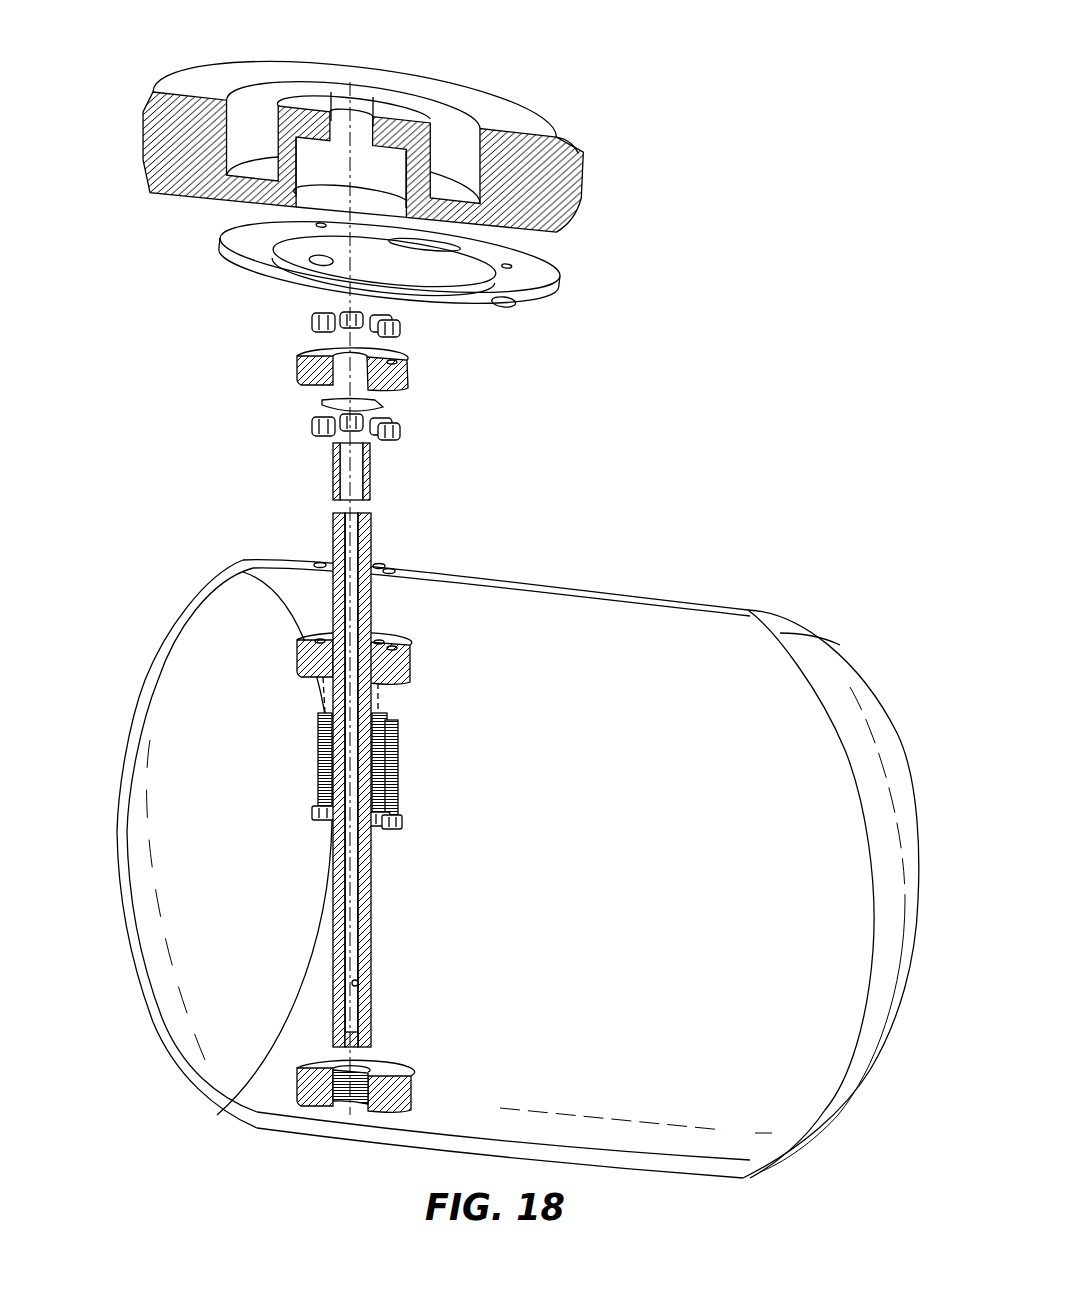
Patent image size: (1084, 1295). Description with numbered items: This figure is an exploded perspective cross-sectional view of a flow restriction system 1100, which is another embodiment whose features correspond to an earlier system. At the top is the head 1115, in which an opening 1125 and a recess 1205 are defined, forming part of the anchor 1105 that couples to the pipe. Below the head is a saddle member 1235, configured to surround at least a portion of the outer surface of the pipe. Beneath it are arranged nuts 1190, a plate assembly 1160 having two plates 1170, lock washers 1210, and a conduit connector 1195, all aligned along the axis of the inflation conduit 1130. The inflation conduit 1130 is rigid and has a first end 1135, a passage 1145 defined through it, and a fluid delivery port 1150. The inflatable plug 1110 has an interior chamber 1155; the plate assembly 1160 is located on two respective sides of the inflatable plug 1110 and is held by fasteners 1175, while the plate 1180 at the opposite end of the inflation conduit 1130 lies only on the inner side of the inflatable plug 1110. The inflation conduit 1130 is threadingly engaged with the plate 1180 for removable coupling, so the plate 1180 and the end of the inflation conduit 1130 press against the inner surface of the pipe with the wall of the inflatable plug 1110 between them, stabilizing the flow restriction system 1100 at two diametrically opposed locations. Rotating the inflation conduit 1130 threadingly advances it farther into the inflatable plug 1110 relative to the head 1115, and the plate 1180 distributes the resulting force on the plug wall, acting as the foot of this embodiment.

The flow restriction system 1100 is at (695, 337).
The anchor 1105 is at (130, 288).
The inflatable plug 1110 is at (828, 679).
The head 1115 is at (157, 137).
The opening 1125 is at (342, 126).
The inflation conduit 1130 is at (373, 890).
The first end 1135 is at (376, 508).
The passage 1145 is at (348, 906).
The fluid delivery port 1150 is at (353, 981).
The interior chamber 1155 is at (636, 657).
The plate assembly 1160 is at (250, 337).
The plates 1170 is at (410, 372).
The fasteners 1175 is at (316, 746).
The plate 1180 is at (411, 1088).
The nuts 1190 is at (398, 323).
The conduit connector 1195 is at (347, 473).
The recess 1205 is at (313, 168).
The lock washers 1210 is at (315, 430).
The saddle members 1235 is at (557, 289).